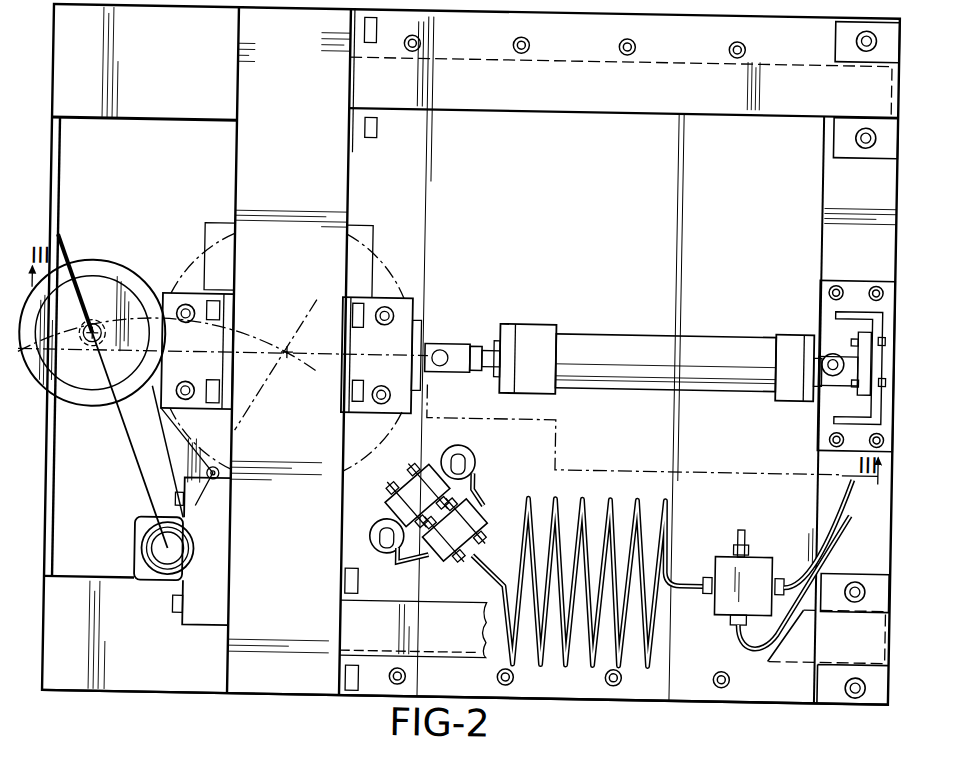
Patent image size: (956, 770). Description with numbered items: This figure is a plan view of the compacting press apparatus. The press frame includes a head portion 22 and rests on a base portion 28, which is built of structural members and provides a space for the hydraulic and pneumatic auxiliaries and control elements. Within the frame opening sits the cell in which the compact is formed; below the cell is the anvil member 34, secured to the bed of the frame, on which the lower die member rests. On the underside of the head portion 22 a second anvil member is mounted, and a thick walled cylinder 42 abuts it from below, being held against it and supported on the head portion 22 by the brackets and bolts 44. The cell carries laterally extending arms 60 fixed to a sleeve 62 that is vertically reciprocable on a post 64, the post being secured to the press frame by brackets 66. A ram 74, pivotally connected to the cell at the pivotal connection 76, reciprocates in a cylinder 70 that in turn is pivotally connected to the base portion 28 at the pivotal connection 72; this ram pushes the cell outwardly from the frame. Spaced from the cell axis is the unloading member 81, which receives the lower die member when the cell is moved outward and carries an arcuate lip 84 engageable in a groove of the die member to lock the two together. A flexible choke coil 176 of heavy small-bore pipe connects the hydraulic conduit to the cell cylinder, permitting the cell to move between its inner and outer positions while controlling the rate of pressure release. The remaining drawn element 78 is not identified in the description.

The head portion 22 is at (251, 155).
The base portion 28 is at (150, 691).
The anvil member 34 is at (375, 475).
The thick walled cylinder 42 is at (361, 243).
The brackets and bolts 44 is at (204, 278).
The laterally extending arms 60 is at (185, 446).
The sleeve 62 is at (151, 555).
The post 64 is at (166, 545).
The brackets 66 is at (163, 582).
The cylinder 70 is at (593, 329).
The pivotal connection 72 is at (839, 358).
The ram 74 is at (484, 336).
The pivotal connection 76 is at (449, 346).
The guard plate 78 is at (854, 49).
The unloading member 81 is at (101, 258).
The arcuate lip 84 is at (80, 394).
The flexible choke coil 176 is at (552, 657).